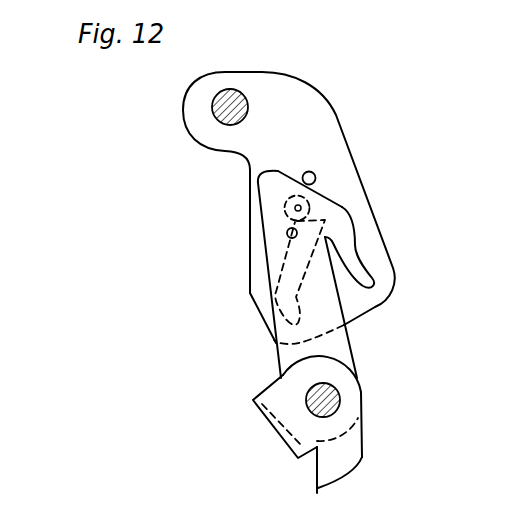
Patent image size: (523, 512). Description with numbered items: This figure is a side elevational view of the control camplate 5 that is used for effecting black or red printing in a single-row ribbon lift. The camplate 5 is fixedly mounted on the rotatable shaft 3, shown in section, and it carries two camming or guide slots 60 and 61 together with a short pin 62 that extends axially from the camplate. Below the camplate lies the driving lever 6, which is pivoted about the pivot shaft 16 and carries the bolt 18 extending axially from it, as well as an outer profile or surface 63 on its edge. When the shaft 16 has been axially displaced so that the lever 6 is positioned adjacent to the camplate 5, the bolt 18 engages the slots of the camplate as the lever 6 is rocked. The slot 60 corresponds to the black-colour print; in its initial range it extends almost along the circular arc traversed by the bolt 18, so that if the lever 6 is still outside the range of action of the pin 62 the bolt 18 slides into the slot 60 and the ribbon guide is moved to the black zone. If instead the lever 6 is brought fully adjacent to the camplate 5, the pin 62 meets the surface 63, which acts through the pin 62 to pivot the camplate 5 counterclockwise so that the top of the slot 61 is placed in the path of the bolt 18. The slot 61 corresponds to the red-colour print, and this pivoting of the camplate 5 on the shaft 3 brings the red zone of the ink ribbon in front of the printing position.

The rotatable shaft 3 is at (212, 110).
The camplate 5 is at (347, 170).
The driving lever 6 is at (350, 343).
The pivot shaft 16 is at (340, 396).
The bolt 18 is at (283, 208).
The guide slot 60 is at (358, 272).
The guide slot 61 is at (283, 268).
The pin 62 is at (318, 178).
The outer profile 63 is at (285, 173).